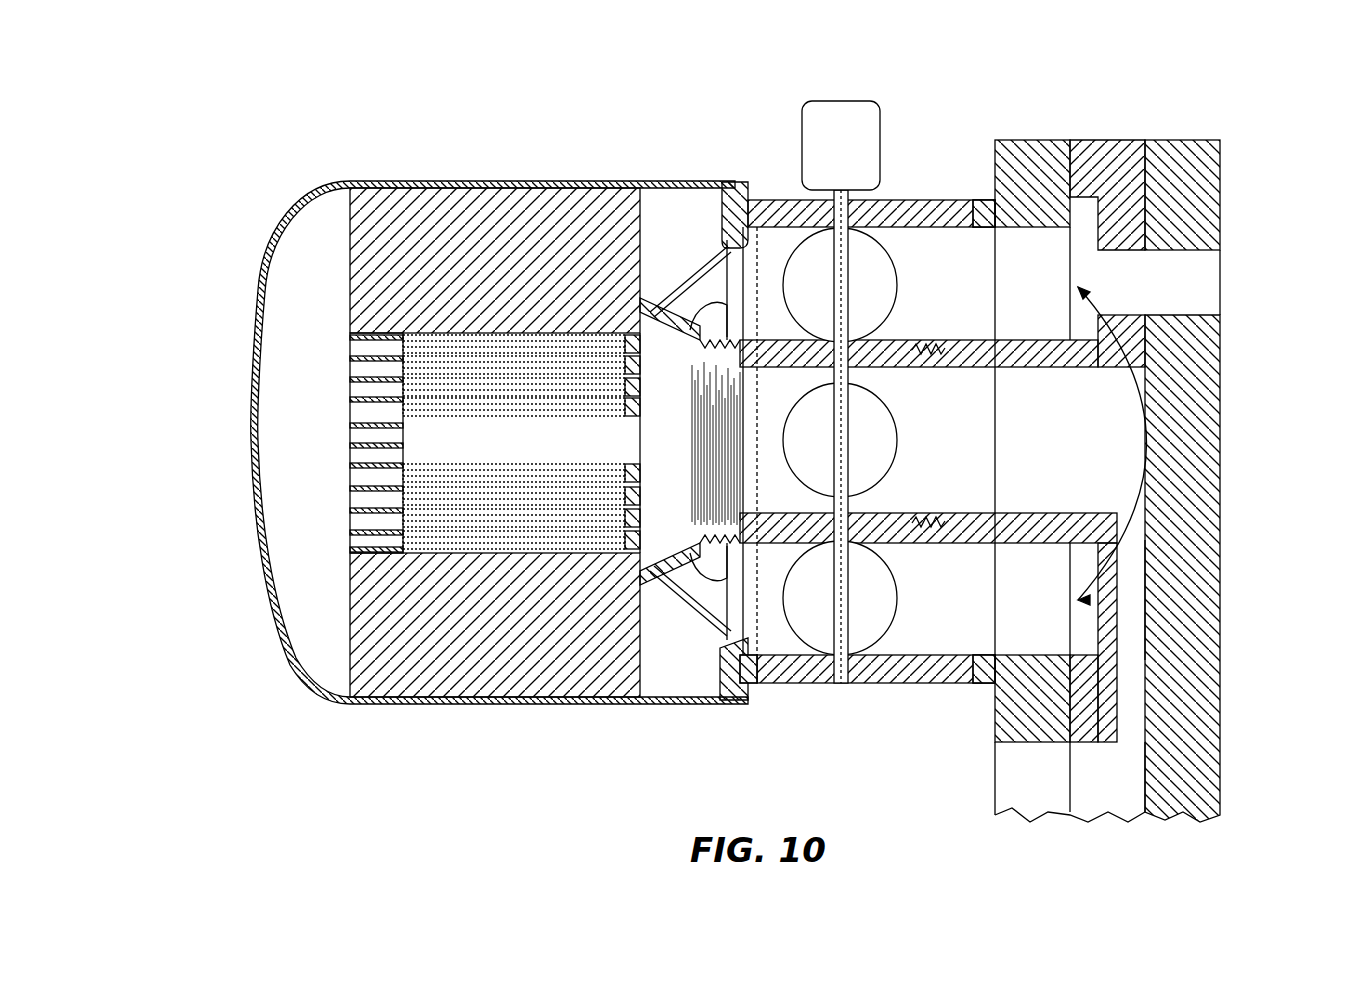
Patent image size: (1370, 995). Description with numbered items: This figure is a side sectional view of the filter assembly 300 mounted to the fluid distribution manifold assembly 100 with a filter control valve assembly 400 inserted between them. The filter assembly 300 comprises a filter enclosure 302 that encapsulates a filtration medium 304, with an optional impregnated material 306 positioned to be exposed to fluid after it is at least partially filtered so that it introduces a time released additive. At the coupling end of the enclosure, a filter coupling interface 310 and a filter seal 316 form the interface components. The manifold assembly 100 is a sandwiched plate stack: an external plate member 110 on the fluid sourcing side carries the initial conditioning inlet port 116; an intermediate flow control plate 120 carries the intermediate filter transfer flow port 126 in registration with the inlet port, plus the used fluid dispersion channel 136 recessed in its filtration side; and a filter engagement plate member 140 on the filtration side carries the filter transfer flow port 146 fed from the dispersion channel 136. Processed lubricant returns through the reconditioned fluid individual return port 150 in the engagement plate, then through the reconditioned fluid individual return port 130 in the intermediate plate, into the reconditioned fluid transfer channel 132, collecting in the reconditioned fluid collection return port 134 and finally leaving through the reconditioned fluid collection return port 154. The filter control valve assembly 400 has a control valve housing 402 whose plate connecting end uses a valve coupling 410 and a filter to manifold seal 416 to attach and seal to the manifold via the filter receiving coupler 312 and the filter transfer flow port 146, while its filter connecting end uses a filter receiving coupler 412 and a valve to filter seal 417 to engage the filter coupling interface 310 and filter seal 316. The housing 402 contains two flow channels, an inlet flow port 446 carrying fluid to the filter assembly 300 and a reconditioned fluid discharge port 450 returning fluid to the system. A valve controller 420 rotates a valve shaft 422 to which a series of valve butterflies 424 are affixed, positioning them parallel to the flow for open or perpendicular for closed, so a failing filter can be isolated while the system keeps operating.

The fluid distribution manifold assembly 100 is at (1250, 122).
The external plate member 110 is at (1178, 140).
The initial conditioning inlet port 116 is at (1208, 270).
The intermediate flow control plate 120 is at (1105, 140).
The intermediate filter transfer flow port 126 is at (1130, 265).
The reconditioned fluid individual return port 130 is at (1095, 405).
The reconditioned fluid transfer channel 132 is at (1138, 608).
The reconditioned fluid collection return port 134 is at (1113, 805).
The used fluid dispersion channel 136 is at (1090, 227).
The filter engagement plate member 140 is at (1032, 140).
The filter transfer flow port 146 is at (985, 200).
The reconditioned fluid individual return port 150 is at (1048, 487).
The reconditioned fluid collection return port 154 is at (1033, 805).
The filter assembly 300 is at (262, 146).
The filter enclosure 302 is at (255, 420).
The filtration medium 304 is at (426, 180).
The impregnated material 306 is at (350, 415).
The filter coupling interface 310 is at (697, 335).
The filter receiving coupler 312 is at (940, 366).
The filter seal 316 is at (735, 181).
The filter control valve assembly 400 is at (772, 145).
The control valve housing 402 is at (865, 683).
The valve coupling 410 is at (930, 348).
The filter receiving coupler 412 is at (755, 488).
The filter to manifold seal 416 is at (964, 212).
The valve to filter seal 417 is at (775, 683).
The valve controller 420 is at (841, 101).
The valve shaft 422 is at (852, 278).
The valve butterfly 424 is at (905, 448).
The inlet flow port 446 is at (987, 296).
The reconditioned fluid discharge port 450 is at (972, 453).